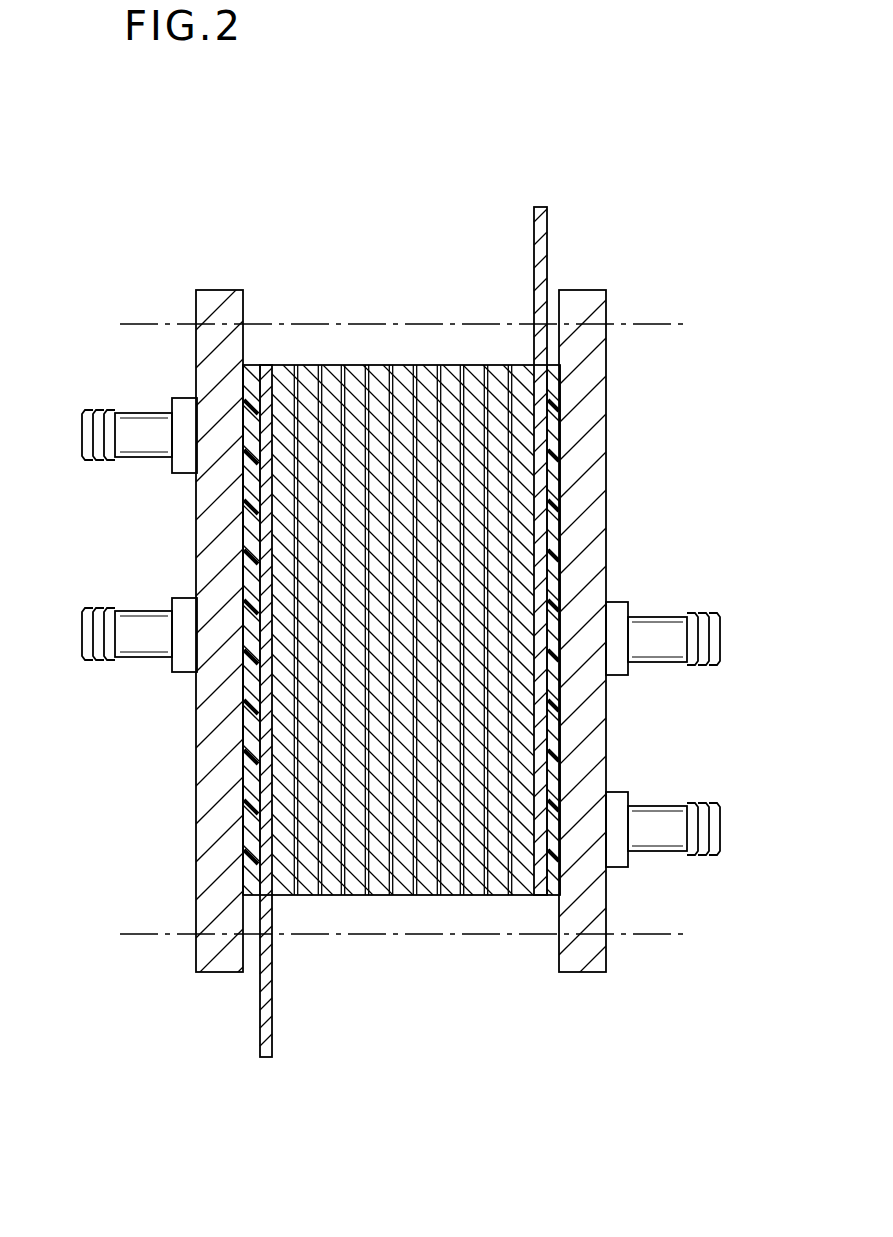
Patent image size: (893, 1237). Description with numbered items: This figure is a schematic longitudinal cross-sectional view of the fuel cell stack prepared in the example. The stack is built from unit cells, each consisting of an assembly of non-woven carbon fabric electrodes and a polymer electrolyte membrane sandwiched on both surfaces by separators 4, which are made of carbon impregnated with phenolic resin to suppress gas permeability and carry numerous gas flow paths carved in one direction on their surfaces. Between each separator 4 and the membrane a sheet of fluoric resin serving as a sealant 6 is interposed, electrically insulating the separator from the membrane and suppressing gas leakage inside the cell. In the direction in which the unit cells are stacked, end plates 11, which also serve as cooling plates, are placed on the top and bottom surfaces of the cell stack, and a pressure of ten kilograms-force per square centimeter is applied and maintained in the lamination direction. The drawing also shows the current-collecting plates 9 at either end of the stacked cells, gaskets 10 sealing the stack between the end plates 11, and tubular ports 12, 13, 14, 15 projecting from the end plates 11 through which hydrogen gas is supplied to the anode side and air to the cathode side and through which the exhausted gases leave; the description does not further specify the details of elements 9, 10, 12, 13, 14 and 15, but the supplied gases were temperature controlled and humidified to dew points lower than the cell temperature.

The separator 4 is at (470, 885).
The sealant 6 is at (428, 872).
The end electrode plate 9 is at (267, 372).
The gasket 10 is at (248, 852).
The end plate 11 is at (207, 303).
The outlet port 12 is at (699, 630).
The inlet port 13 is at (93, 632).
The inlet port 14 is at (85, 433).
The outlet port 15 is at (700, 815).